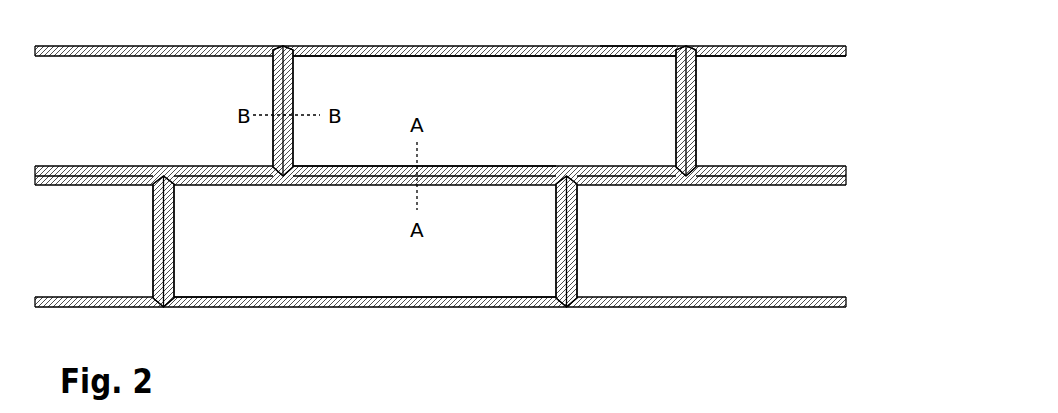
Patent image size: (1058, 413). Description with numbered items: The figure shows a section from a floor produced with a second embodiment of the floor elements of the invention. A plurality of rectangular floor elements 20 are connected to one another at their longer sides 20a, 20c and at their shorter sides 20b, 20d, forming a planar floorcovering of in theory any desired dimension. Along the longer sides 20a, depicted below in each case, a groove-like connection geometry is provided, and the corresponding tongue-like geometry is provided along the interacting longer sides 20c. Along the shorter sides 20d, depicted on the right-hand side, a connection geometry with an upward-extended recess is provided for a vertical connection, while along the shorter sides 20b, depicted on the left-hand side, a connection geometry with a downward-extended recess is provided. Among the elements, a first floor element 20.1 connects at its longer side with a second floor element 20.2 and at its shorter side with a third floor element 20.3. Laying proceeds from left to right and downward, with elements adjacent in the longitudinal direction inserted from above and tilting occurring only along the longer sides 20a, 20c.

The floor element 20 is at (167, 65).
The first floor element 20.1 is at (385, 63).
The second floor element 20.2 is at (317, 287).
The third floor element 20.3 is at (720, 62).
The longer side 20a is at (477, 170).
The shorter side 20b is at (288, 95).
The longer side 20c is at (626, 51).
The shorter side 20d is at (672, 117).